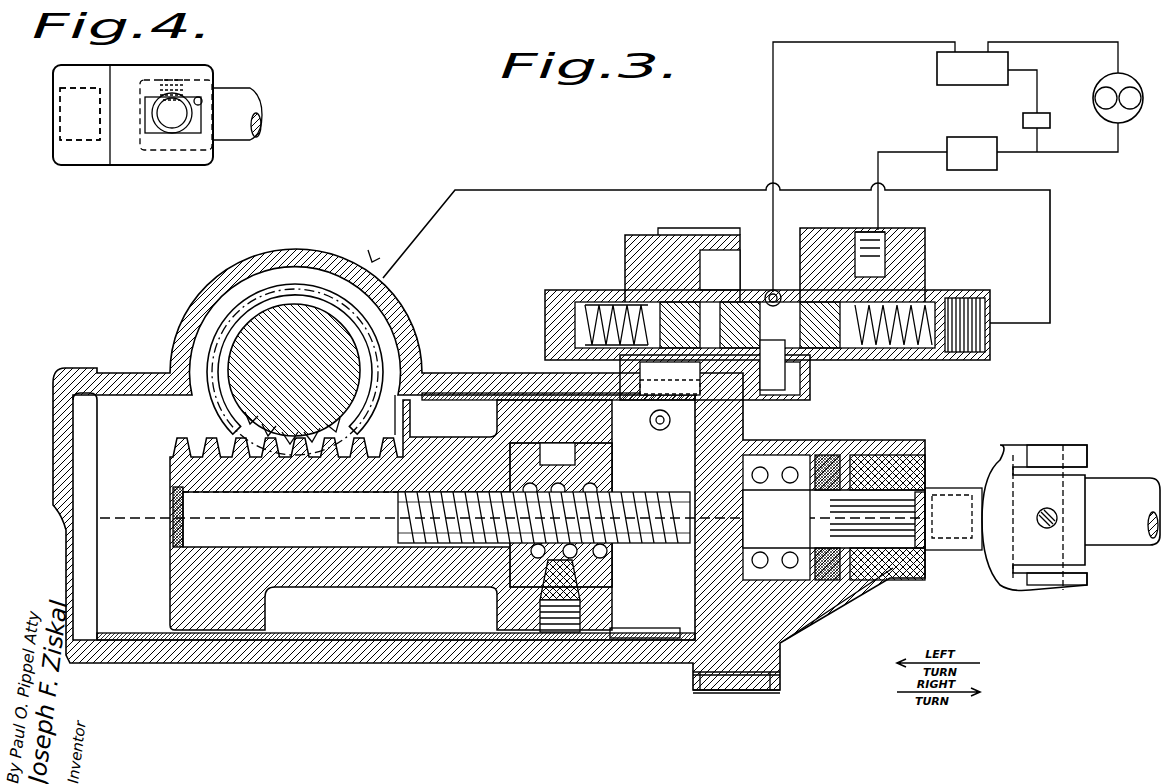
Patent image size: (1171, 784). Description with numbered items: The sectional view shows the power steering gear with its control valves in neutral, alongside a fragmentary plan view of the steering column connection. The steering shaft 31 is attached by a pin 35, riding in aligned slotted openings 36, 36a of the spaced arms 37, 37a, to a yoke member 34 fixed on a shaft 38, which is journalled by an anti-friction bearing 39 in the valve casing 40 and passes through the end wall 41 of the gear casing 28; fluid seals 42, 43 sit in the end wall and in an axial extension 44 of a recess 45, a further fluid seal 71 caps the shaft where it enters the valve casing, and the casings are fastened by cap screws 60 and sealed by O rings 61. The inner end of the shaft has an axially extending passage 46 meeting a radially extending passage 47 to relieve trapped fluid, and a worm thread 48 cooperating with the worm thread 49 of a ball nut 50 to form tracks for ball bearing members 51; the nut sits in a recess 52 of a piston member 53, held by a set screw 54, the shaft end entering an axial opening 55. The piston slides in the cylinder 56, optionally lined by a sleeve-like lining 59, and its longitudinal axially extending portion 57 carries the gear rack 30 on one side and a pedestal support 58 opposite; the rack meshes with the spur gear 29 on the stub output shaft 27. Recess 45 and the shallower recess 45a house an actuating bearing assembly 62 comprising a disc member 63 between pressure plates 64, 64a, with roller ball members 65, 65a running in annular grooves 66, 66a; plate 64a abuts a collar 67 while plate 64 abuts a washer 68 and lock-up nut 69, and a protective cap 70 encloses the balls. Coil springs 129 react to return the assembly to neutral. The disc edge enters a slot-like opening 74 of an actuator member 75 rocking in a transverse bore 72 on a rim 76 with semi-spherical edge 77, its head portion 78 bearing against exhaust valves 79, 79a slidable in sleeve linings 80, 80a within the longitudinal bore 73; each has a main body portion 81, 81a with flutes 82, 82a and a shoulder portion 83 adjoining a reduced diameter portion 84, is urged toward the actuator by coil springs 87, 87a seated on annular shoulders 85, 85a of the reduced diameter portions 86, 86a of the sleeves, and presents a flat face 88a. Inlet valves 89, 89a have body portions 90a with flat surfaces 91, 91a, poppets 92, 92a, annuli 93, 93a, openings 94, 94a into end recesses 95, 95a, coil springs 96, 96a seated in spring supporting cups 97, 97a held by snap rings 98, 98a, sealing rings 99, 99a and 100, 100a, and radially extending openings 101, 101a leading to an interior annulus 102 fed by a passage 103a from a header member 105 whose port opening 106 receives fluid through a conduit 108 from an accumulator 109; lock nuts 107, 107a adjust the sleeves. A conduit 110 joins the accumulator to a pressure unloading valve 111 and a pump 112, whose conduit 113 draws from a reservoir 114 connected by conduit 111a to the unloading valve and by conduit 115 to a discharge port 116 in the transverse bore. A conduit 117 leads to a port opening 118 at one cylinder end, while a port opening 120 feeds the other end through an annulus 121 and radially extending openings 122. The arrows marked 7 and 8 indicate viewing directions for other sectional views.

In FIG. 3, the direction arrow 7 is at (841, 400).
In FIG. 3, the direction arrow 8 is at (782, 634).
In FIG. 3, the stub output shaft 27 is at (333, 373).
In FIG. 3, the gear casing 28 is at (412, 300).
In FIG. 3, the spur gear 29 is at (300, 290).
In FIG. 3, the gear rack 30 is at (385, 415).
In FIG. 4, the steering shaft 31 is at (245, 100).
In FIG. 3, the steering shaft 31 is at (1115, 498).
In FIG. 3, the yoke member 34 is at (996, 430).
In FIG. 4, the pin 35 is at (180, 122).
In FIG. 3, the pin 35 is at (1055, 445).
In FIG. 3, the slotted opening 36 is at (1075, 460).
In FIG. 4, the slotted opening 36a is at (203, 99).
In FIG. 3, the slotted opening 36a is at (1070, 585).
In FIG. 3, the arm 37 is at (1000, 450).
In FIG. 4, the arm 37a is at (127, 150).
In FIG. 3, the arm 37a is at (985, 578).
In FIG. 4, the shaft 38 is at (90, 125).
In FIG. 3, the shaft 38 is at (945, 488).
In FIG. 3, the anti-friction bearing 39 is at (912, 450).
In FIG. 3, the valve casing 40 is at (855, 582).
In FIG. 3, the end wall 41 is at (690, 466).
In FIG. 3, the fluid seal 42 is at (700, 470).
In FIG. 3, the fluid seal 43 is at (895, 455).
In FIG. 3, the axial extension 44 is at (888, 445).
In FIG. 3, the recess 45 is at (822, 580).
In FIG. 3, the recess 45a is at (700, 562).
In FIG. 3, the axially extending passage 46 is at (398, 512).
In FIG. 3, the radially extending passage 47 is at (740, 500).
In FIG. 3, the worm thread 48 is at (636, 566).
In FIG. 3, the worm thread 49 is at (605, 560).
In FIG. 3, the ball nut 50 is at (578, 583).
In FIG. 3, the ball bearing members 51 is at (560, 480).
In FIG. 3, the recess 52 is at (592, 592).
In FIG. 3, the piston member 53 is at (600, 618).
In FIG. 3, the set screw 54 is at (556, 632).
In FIG. 3, the axial opening 55 is at (318, 548).
In FIG. 3, the cylinder 56 is at (478, 438).
In FIG. 3, the longitudinal axially extending portion 57 is at (428, 438).
In FIG. 3, the pedestal support 58 is at (280, 612).
In FIG. 3, the sleeve-like lining 59 is at (410, 635).
In FIG. 3, the cap screws 60 is at (745, 693).
In FIG. 3, the O rings 61 is at (615, 645).
In FIG. 3, the actuating bearing assembly 62 is at (836, 585).
In FIG. 3, the disc member 63 is at (826, 505).
In FIG. 3, the pressure plate 64 is at (868, 424).
In FIG. 3, the pressure plate 64a is at (708, 452).
In FIG. 3, the roller ball members 65 is at (786, 517).
In FIG. 3, the roller ball members 65a is at (763, 537).
In FIG. 3, the annular grooves 66 is at (870, 524).
In FIG. 3, the annular grooves 66a is at (757, 566).
In FIG. 3, the collar 67 is at (745, 515).
In FIG. 3, the washer 68 is at (887, 505).
In FIG. 3, the lock-up nut 69 is at (893, 424).
In FIG. 3, the protective cap 70 is at (700, 580).
In FIG. 3, the fluid seal 71 is at (938, 452).
In FIG. 3, the transverse bore 72 is at (840, 422).
In FIG. 3, the longitudinal bore 73 is at (716, 384).
In FIG. 3, the slot-like opening 74 is at (727, 440).
In FIG. 3, the actuator member 75 is at (838, 408).
In FIG. 3, the rim 76 is at (805, 412).
In FIG. 3, the semi-spherical edge 77 is at (767, 395).
In FIG. 3, the head portion 78 is at (778, 287).
In FIG. 3, the exhaust valve 79 is at (772, 365).
In FIG. 3, the exhaust valve 79a is at (770, 383).
In FIG. 3, the sleeve lining 80 is at (790, 250).
In FIG. 3, the sleeve lining 80a is at (740, 255).
In FIG. 3, the main body portion 81 is at (785, 262).
In FIG. 3, the main body portion 81a is at (745, 245).
In FIG. 3, the flutes 82 is at (813, 360).
In FIG. 3, the flutes 82a is at (745, 280).
In FIG. 3, the shoulder portion 83 is at (817, 262).
In FIG. 3, the reduced diameter portion 84 is at (770, 365).
In FIG. 3, the annular shoulder 85 is at (860, 262).
In FIG. 3, the annular shoulder 85a is at (715, 285).
In FIG. 3, the reduced diameter portion 86 is at (882, 253).
In FIG. 3, the reduced diameter portion 86a is at (665, 245).
In FIG. 3, the coil spring 87 is at (815, 250).
In FIG. 3, the coil spring 87a is at (713, 280).
In FIG. 3, the flat face 88a is at (722, 317).
In FIG. 3, the inlet valve 89 is at (915, 268).
In FIG. 3, the inlet valve 89a is at (650, 255).
In FIG. 3, the body portion 90a is at (670, 386).
In FIG. 3, the flat surface 91 is at (945, 298).
In FIG. 3, the flat surface 91a is at (720, 330).
In FIG. 3, the poppet 92 is at (920, 282).
In FIG. 3, the poppet 92a is at (635, 280).
In FIG. 3, the annulus 93 is at (890, 378).
In FIG. 3, the annulus 93a is at (555, 352).
In FIG. 3, the opening 94 is at (885, 358).
In FIG. 3, the opening 94a is at (575, 330).
In FIG. 3, the end recess 95 is at (813, 313).
In FIG. 3, the end recess 95a is at (630, 292).
In FIG. 3, the coil spring 96 is at (970, 295).
In FIG. 3, the coil spring 96a is at (578, 292).
In FIG. 3, the spring supporting cup 97 is at (985, 312).
In FIG. 3, the spring supporting cup 97a is at (560, 320).
In FIG. 3, the snap ring 98 is at (985, 305).
In FIG. 3, the snap ring 98a is at (560, 305).
In FIG. 3, the sealing ring 99 is at (880, 378).
In FIG. 3, the sealing ring 99a is at (660, 368).
In FIG. 3, the sealing ring 100 is at (880, 385).
In FIG. 3, the sealing ring 100a is at (695, 250).
In FIG. 3, the radially extending openings 101 is at (910, 398).
In FIG. 3, the radially extending openings 101a is at (585, 378).
In FIG. 3, the interior annulus 102 is at (918, 250).
In FIG. 3, the passage 103a is at (630, 270).
In FIG. 3, the header member 105 is at (905, 240).
In FIG. 3, the port opening 106 is at (890, 236).
In FIG. 3, the lock nut 107 is at (950, 360).
In FIG. 3, the lock nut 107a is at (580, 290).
In FIG. 3, the conduit 108 is at (908, 152).
In FIG. 3, the accumulator 109 is at (965, 145).
In FIG. 3, the conduit 110 is at (1020, 152).
In FIG. 3, the pressure unloading valve 111 is at (1040, 118).
In FIG. 3, the conduit 111a is at (1040, 80).
In FIG. 3, the pump 112 is at (1135, 122).
In FIG. 3, the conduit 113 is at (1118, 42).
In FIG. 3, the reservoir 114 is at (937, 68).
In FIG. 3, the conduit 115 is at (858, 42).
In FIG. 3, the discharge port 116 is at (770, 230).
In FIG. 3, the conduit 117 is at (1050, 226).
In FIG. 3, the port opening 118 is at (371, 270).
In FIG. 3, the port opening 120 is at (650, 428).
In FIG. 3, the annulus 121 is at (645, 626).
In FIG. 3, the radially extending openings 122 is at (660, 432).
In FIG. 3, the coil springs 129 is at (780, 650).